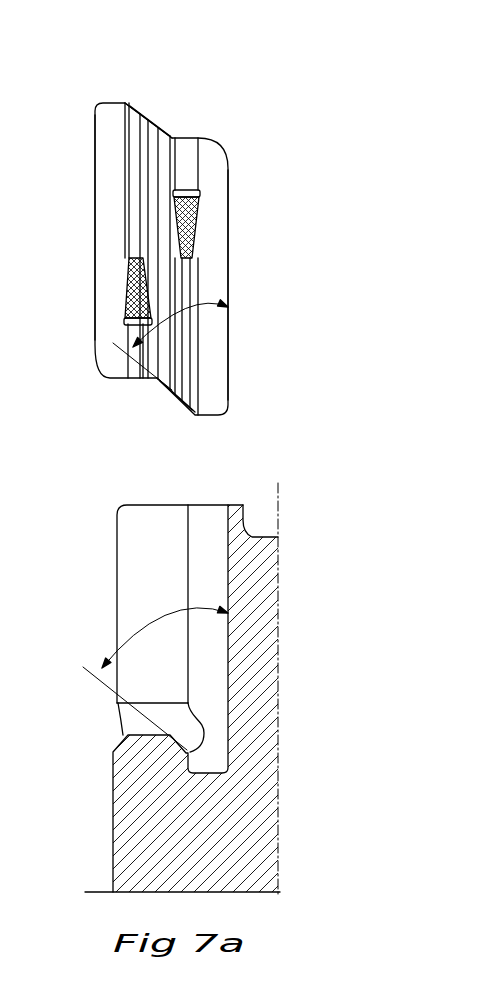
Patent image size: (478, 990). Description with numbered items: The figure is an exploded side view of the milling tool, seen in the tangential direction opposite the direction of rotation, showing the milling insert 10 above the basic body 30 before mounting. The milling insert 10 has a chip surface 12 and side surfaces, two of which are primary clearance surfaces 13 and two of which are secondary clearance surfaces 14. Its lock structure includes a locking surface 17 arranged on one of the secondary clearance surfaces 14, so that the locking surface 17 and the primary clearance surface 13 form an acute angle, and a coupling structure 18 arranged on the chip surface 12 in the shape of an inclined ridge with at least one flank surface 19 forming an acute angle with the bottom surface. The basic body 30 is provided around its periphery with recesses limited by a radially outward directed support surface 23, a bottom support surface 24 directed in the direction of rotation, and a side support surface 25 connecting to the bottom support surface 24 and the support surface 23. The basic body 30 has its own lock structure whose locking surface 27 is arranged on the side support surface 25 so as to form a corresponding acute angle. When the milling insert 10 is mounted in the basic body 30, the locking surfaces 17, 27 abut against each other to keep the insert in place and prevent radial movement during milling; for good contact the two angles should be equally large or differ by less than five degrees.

The milling insert 10 is at (94, 80).
The chip surface 12 is at (211, 352).
The primary clearance surface 13 is at (97, 220).
The secondary clearance surface 14 is at (186, 110).
The locking surface 17 is at (154, 122).
The coupling structure 18 is at (199, 208).
The flank surface 19 is at (188, 222).
The basic body 30 is at (94, 570).
The support surface 23 is at (228, 537).
The bottom support surface 24 is at (169, 557).
The side support surface 25 is at (148, 725).
The locking surface 27 is at (183, 736).